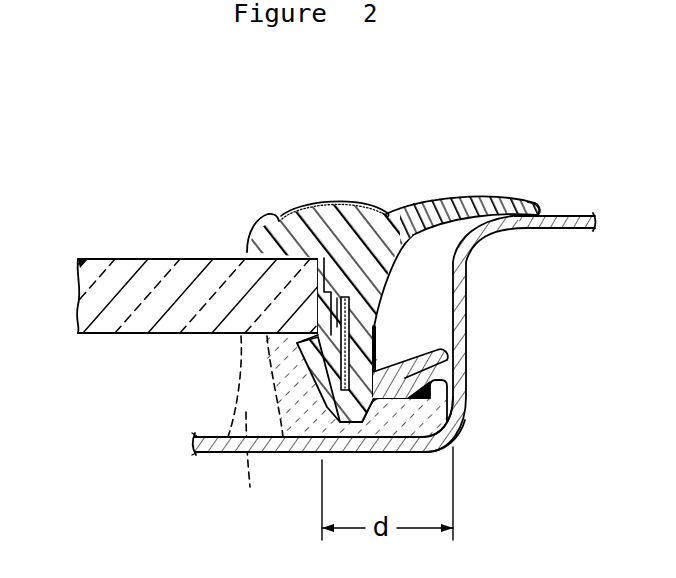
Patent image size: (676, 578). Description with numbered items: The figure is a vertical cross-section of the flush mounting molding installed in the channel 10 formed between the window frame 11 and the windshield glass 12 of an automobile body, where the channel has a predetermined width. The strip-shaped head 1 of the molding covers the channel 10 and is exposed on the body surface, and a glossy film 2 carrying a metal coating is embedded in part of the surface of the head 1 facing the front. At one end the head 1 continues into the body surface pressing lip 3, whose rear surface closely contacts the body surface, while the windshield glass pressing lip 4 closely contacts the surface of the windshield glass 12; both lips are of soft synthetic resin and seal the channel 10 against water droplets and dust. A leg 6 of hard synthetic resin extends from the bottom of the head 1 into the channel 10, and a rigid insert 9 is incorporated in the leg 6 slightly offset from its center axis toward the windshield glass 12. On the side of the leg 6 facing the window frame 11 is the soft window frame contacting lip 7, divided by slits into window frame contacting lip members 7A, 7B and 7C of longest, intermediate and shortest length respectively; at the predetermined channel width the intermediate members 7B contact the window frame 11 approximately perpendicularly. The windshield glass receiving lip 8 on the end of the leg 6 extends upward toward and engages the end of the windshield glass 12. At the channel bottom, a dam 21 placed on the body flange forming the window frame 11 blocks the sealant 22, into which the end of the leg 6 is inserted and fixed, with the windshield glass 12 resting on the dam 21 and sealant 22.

The head 1 is at (432, 195).
The glossy film 2 is at (310, 200).
The body surface pressing lip 3 is at (525, 200).
The windshield glass pressing lip 4 is at (246, 240).
The leg 6 is at (308, 386).
The window frame contacting lip 7 is at (546, 353).
The window frame contacting lip member 7A is at (447, 356).
The window frame contacting lip member 7B is at (447, 386).
The window frame contacting lip member 7C is at (432, 417).
The windshield glass receiving lip 8 is at (308, 357).
The insert 9 is at (374, 323).
The channel 10 is at (436, 283).
The window frame 11 is at (570, 214).
The windshield glass 12 is at (118, 258).
The dam 21 is at (255, 427).
The sealant 22 is at (424, 454).